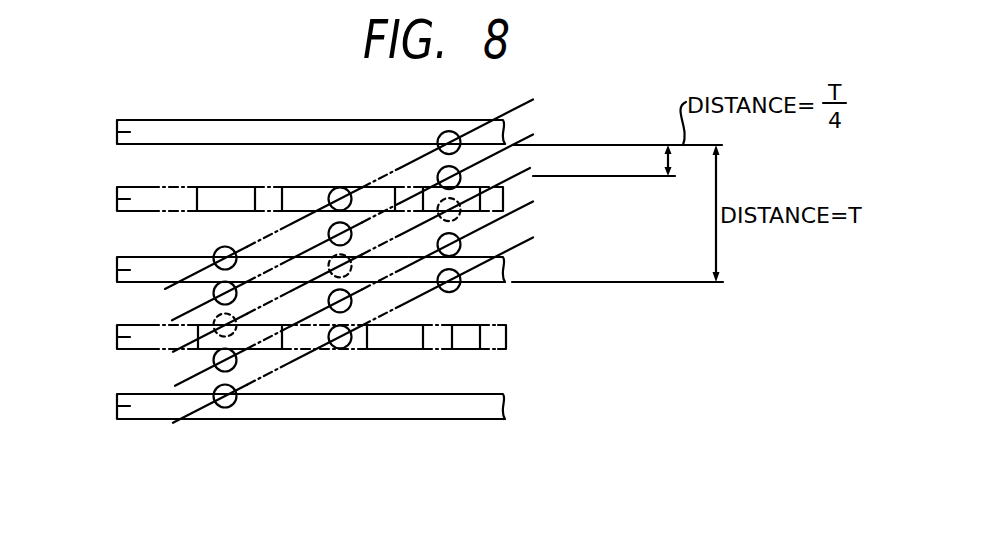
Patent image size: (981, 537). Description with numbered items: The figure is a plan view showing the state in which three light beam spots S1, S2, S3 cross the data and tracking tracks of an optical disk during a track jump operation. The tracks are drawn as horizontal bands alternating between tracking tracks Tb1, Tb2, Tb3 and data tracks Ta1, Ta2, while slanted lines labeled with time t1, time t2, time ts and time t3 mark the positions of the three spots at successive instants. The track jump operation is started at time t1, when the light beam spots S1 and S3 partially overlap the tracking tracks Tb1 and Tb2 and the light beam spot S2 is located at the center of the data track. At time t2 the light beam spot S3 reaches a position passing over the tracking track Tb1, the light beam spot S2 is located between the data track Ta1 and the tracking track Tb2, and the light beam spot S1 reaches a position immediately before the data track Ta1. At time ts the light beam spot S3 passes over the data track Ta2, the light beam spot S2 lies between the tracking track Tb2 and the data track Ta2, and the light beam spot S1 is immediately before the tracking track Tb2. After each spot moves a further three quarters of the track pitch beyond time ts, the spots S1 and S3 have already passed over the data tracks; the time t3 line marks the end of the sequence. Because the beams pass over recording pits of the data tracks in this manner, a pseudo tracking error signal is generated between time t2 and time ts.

The tracking track Tb3 is at (117, 132).
The data track Ta2 is at (117, 199).
The tracking track Tb2 is at (117, 270).
The data track Ta1 is at (117, 337).
The tracking track Tb1 is at (117, 406).
The light beam spot S1 is at (230, 408).
The light beam spot S2 is at (342, 349).
The light beam spot S3 is at (447, 292).
The time t3 is at (392, 189).
The time ts is at (394, 220).
The time t2 is at (397, 289).
The time t1 is at (396, 326).